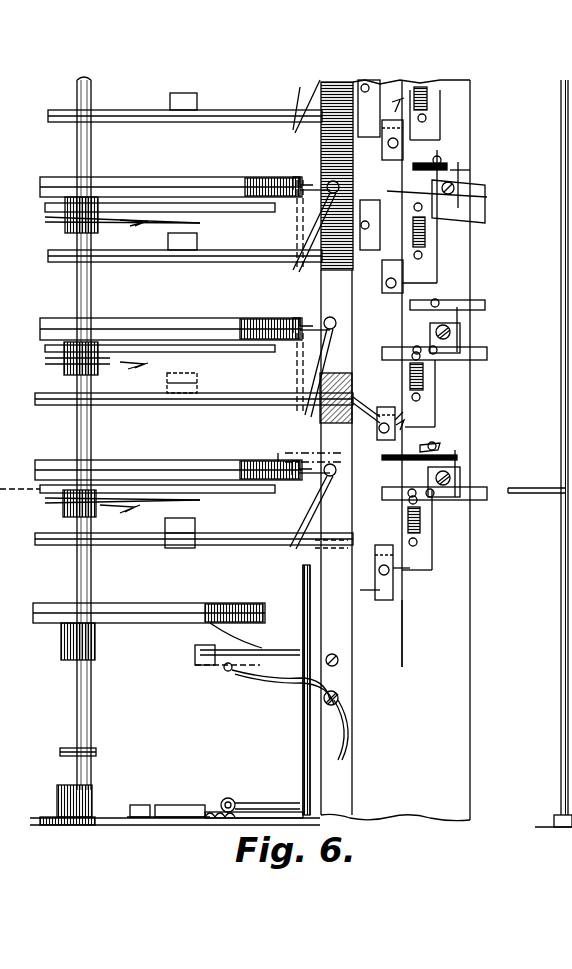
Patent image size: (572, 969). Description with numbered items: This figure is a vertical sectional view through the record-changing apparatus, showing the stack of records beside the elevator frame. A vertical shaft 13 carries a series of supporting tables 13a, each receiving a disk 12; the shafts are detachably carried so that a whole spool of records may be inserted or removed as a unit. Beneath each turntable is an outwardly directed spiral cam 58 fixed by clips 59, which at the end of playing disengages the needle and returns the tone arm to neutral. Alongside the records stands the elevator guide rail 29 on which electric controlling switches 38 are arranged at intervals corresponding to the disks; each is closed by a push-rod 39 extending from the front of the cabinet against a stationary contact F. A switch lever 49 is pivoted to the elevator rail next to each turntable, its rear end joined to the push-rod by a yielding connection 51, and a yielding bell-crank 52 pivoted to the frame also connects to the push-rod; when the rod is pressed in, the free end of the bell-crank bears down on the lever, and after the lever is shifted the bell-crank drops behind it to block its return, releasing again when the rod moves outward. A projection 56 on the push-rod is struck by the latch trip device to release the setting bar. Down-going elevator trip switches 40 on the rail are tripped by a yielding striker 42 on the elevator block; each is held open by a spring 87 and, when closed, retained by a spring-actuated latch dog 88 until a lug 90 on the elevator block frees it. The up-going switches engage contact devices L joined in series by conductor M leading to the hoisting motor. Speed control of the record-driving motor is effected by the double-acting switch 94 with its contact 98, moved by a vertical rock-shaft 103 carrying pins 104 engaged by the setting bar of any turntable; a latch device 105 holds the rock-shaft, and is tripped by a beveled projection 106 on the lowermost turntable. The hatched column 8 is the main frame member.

The frame column 8 is at (338, 472).
The disk 12 is at (162, 323).
The shaft 13 is at (84, 424).
The supporting table 13a is at (205, 344).
The guide rail 29 is at (424, 373).
The controlling switch 38 is at (380, 408).
The push-rod 39 is at (232, 404).
The down-going elevator trip switch 40 is at (470, 356).
The yielding striker 42 is at (465, 342).
The switch lever 49 is at (278, 326).
The yielding connection 51 is at (296, 368).
The yielding bell-crank 52 is at (333, 504).
The projection 56 is at (200, 384).
The spiral cam 58 is at (158, 503).
The clip 59 is at (190, 212).
The spring 87 is at (424, 384).
The spring-actuated latch dog 88 is at (450, 480).
The lug 90 is at (480, 308).
The speed-controlling switch 94 is at (212, 800).
The contact 98 is at (462, 330).
The vertical rock-shaft 103 is at (312, 617).
The lug or pin 104 is at (545, 494).
The latch device 105 is at (226, 672).
The beveled projection 106 is at (215, 645).
The stationary contact F is at (389, 255).
The contact device L is at (440, 447).
The conductor M is at (405, 650).